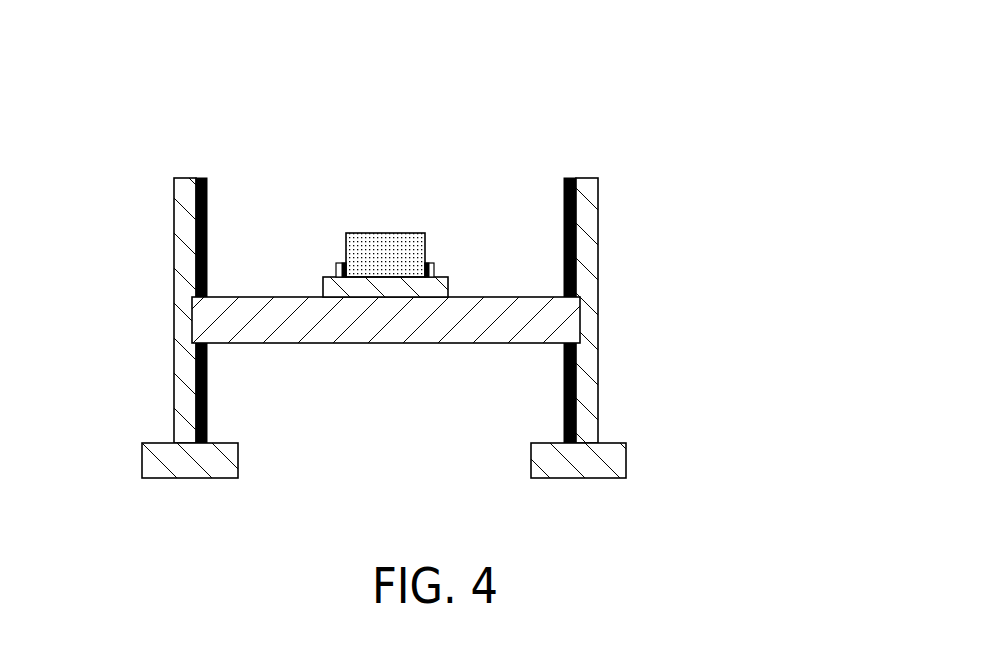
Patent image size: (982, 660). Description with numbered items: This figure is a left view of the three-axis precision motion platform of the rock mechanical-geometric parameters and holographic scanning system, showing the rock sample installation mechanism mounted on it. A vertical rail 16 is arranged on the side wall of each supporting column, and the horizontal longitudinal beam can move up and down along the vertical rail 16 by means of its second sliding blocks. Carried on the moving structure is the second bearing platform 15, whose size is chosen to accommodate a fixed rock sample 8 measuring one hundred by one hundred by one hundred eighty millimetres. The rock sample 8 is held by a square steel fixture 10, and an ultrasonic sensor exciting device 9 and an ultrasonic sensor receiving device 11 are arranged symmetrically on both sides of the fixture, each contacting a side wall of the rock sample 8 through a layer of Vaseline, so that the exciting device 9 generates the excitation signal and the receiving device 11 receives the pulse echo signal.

The rock sample 8 is at (392, 255).
The ultrasonic sensor exciting device 9 is at (338, 268).
The square steel fixture 10 is at (344, 265).
The ultrasonic sensor receiving device 11 is at (435, 267).
The second bearing platform 15 is at (347, 288).
The vertical rail 16 is at (577, 250).